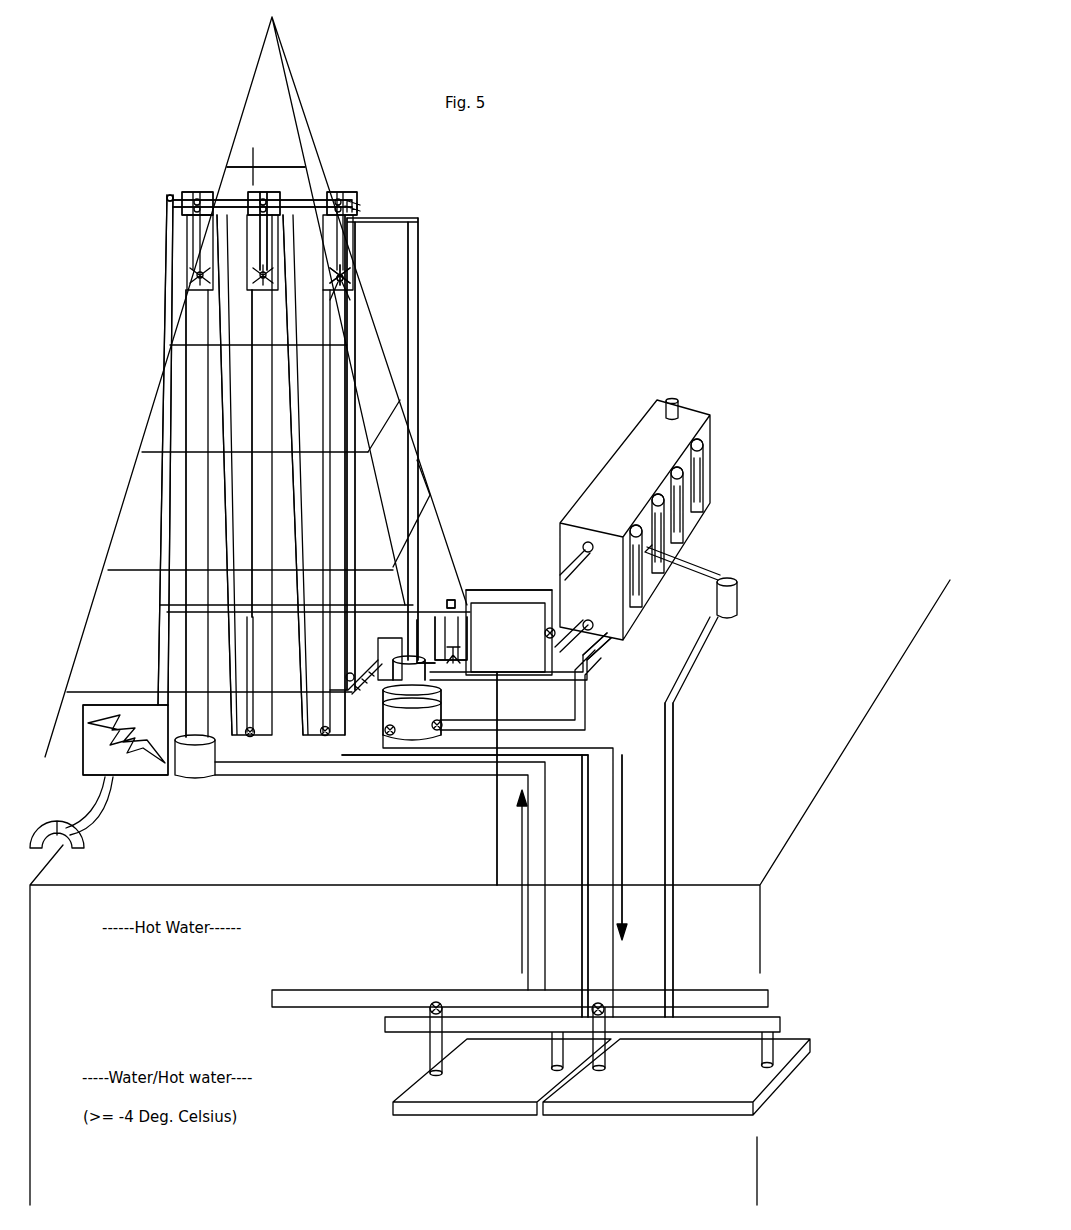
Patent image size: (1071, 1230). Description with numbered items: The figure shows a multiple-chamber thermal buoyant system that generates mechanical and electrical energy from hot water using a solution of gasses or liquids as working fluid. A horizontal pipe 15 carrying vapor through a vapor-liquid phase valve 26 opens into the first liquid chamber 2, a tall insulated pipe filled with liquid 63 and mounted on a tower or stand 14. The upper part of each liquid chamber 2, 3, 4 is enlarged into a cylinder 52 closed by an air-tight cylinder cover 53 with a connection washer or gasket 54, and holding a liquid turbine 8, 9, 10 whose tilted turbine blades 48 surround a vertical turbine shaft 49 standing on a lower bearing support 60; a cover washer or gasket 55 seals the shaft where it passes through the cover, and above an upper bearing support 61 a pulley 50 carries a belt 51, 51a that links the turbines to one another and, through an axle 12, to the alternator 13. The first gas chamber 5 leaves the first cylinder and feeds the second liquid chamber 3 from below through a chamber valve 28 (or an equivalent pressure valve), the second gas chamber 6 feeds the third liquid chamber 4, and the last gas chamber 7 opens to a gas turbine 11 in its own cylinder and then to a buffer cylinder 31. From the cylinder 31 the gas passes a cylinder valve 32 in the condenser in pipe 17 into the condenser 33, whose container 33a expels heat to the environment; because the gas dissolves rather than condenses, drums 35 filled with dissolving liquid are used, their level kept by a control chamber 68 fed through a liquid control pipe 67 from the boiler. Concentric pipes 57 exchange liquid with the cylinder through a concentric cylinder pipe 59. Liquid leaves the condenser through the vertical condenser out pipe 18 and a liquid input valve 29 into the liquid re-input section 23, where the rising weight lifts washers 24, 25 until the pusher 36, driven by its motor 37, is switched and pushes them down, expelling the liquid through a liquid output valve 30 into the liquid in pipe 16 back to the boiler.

The liquid chamber 2 is at (188, 447).
The liquid chamber 3 is at (252, 400).
The liquid chamber 4 is at (337, 398).
The gas chamber 5 is at (220, 420).
The gas chamber 6 is at (285, 377).
The gas chamber 7 is at (420, 303).
The liquid turbine 8 is at (193, 257).
The liquid turbine 9 is at (368, 444).
The liquid turbine 10 is at (409, 429).
The gas turbine 11 is at (462, 615).
The axle 12 is at (162, 482).
The alternator 13 is at (140, 780).
The tower or stand 14 is at (193, 248).
The vapor output pipe/horizontal pipe 15 is at (545, 810).
The liquid in pipe 16 is at (615, 872).
The condenser in pipe 17 is at (492, 590).
The condenser out pipe 18 is at (743, 845).
The liquid re-input section 23 is at (403, 740).
The washer 24 is at (440, 600).
The washer 25 is at (407, 717).
The vapor-liquid phase valve 26 is at (600, 1004).
The chamber valve 28 is at (325, 735).
The liquid input valve 29 is at (438, 728).
The liquid output valve 30 is at (390, 734).
The cylinder 31 is at (489, 778).
The cylinder valve 32 is at (553, 760).
The condenser 33 is at (688, 427).
The container 33a is at (673, 483).
The drums 35 is at (695, 475).
The pusher with switching mechanism 36 is at (410, 585).
The compressor/motor 37 is at (395, 585).
The turbine blades 48 is at (347, 282).
The turbine shaft 49 is at (343, 273).
The pulley 50 is at (352, 203).
The belt 51 is at (303, 198).
The belt 51a is at (227, 200).
The cylinder 52 is at (190, 223).
The cylinder cover 53 is at (253, 185).
The connection washer or gasket 54 is at (350, 212).
The cover washer or gasket 55 is at (280, 212).
The concentric pipes/cylinders 57 is at (353, 417).
The concentric cylinder pipe 59 is at (551, 628).
The lower bearing support 60 is at (343, 278).
The upper bearing support 61 is at (175, 200).
The liquid-chamber's liquid 63 is at (197, 547).
The liquid control pipe 67 is at (693, 567).
The control chamber 68 is at (737, 580).